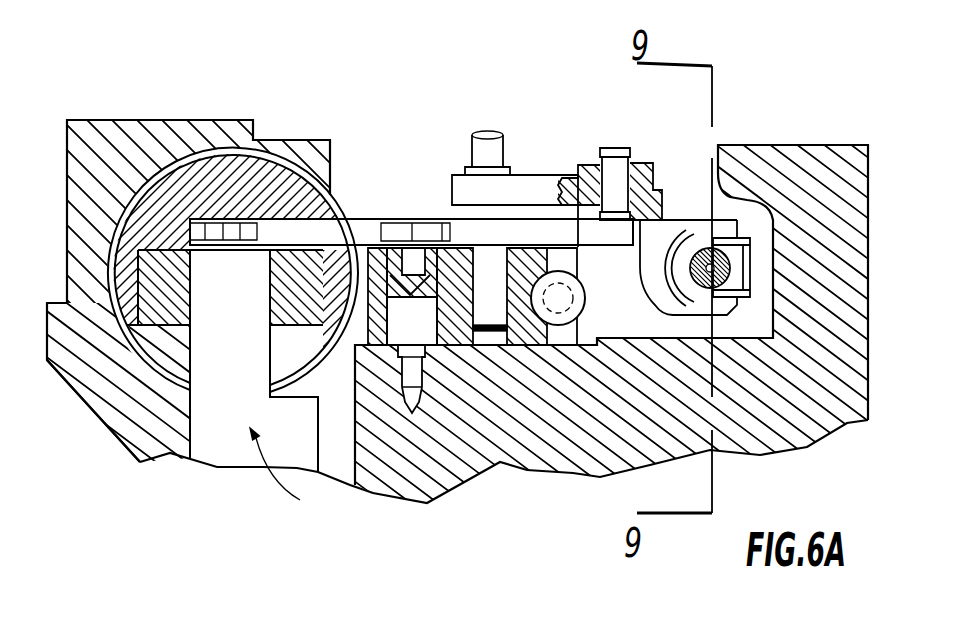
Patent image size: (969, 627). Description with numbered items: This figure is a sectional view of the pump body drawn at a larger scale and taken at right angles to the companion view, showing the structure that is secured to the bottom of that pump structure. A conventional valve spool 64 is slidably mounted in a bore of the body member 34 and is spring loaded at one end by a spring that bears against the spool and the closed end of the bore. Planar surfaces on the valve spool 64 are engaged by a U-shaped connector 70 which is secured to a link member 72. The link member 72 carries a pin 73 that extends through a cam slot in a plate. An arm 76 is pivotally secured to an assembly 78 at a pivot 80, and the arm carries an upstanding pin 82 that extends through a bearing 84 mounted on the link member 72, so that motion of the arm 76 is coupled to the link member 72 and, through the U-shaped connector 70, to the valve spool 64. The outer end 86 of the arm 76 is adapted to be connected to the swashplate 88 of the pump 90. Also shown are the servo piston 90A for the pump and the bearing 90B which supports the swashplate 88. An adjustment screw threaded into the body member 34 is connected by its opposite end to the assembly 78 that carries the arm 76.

The body member 34 is at (805, 145).
The valve spool 64 is at (712, 220).
The U-shaped connector 70 is at (727, 310).
The link member 72 is at (527, 183).
The pin 73 is at (492, 127).
The arm 76 is at (370, 222).
The assembly 78 is at (586, 303).
The pivot 80 is at (492, 247).
The upstanding pin 82 is at (617, 147).
The bearing 84 is at (653, 172).
The outer end of arm 86 is at (188, 216).
The swashplate 88 is at (240, 443).
The pump 90 is at (285, 472).
The servo piston 90A is at (248, 178).
The bearing for the swashplate 90B is at (108, 385).